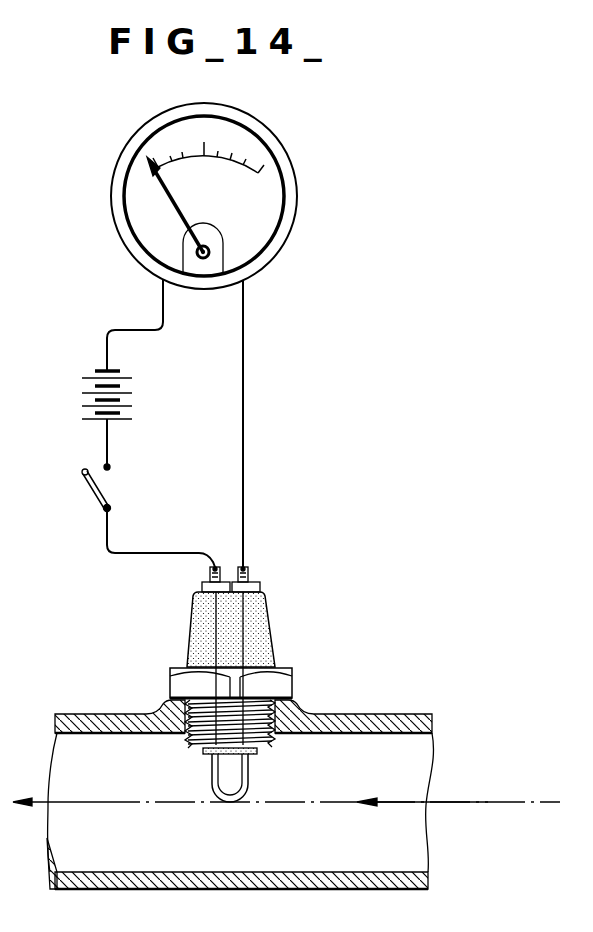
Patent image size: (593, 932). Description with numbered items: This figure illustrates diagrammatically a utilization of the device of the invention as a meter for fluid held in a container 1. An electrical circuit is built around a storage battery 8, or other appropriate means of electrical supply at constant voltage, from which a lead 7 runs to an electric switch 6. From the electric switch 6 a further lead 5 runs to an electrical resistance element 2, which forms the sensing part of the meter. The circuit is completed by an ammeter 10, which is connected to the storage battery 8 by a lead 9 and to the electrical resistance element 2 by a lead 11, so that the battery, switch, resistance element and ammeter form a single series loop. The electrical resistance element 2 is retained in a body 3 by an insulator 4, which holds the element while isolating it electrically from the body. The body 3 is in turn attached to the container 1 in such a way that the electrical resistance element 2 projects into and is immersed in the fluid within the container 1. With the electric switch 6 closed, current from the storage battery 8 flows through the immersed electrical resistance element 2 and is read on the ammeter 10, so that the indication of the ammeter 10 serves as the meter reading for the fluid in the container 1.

The container 1 is at (90, 714).
The electrical resistance element 2 is at (212, 778).
The body 3 is at (170, 671).
The insulator 4 is at (190, 626).
The lead 5 is at (181, 553).
The electric switch 6 is at (117, 496).
The lead 7 is at (107, 432).
The storage battery 8 is at (132, 400).
The lead 9 is at (163, 322).
The ammeter 10 is at (264, 256).
The lead 11 is at (243, 418).